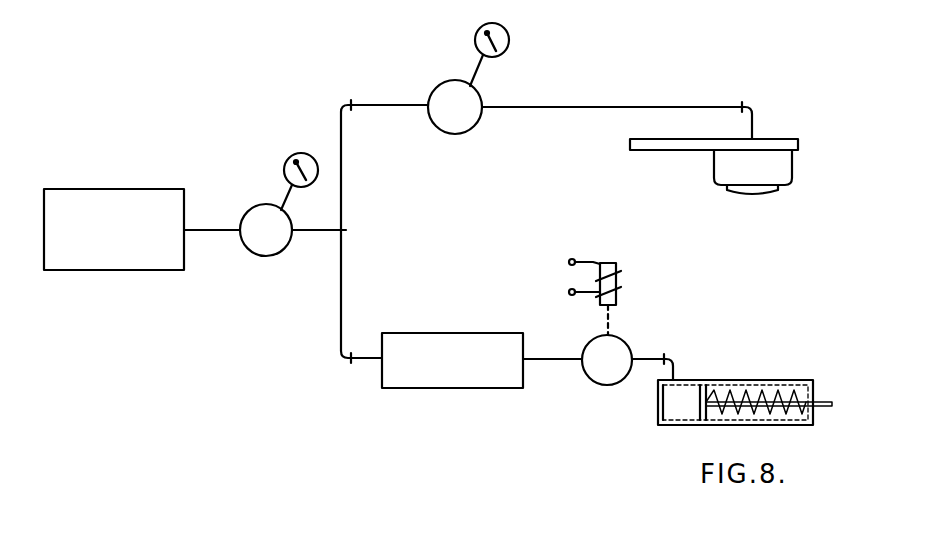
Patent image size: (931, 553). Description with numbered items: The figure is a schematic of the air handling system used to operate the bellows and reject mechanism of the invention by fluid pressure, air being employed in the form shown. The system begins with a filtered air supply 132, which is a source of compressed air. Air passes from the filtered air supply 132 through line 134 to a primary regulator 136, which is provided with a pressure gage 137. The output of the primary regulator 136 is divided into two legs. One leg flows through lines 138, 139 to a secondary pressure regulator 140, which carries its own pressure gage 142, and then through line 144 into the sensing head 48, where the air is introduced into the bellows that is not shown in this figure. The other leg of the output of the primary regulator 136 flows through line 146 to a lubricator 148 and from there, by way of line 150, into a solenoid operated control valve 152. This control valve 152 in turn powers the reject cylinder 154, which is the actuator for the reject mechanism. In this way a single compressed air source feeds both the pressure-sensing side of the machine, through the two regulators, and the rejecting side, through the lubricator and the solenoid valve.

The sensing head 48 is at (714, 166).
The filtered air supply 132 is at (131, 189).
The line 134 is at (215, 230).
The primary regulator 136 is at (247, 212).
The pressure gage 137 is at (286, 160).
The line 138 is at (318, 230).
The line 139 is at (341, 176).
The secondary pressure regulator 140 is at (438, 85).
The pressure gage 142 is at (509, 40).
The line 144 is at (600, 107).
The line 146 is at (341, 283).
The lubricator 148 is at (466, 319).
The air line 150 is at (552, 359).
The solenoid operated control valve 152 is at (625, 343).
The reject cylinder 154 is at (760, 380).